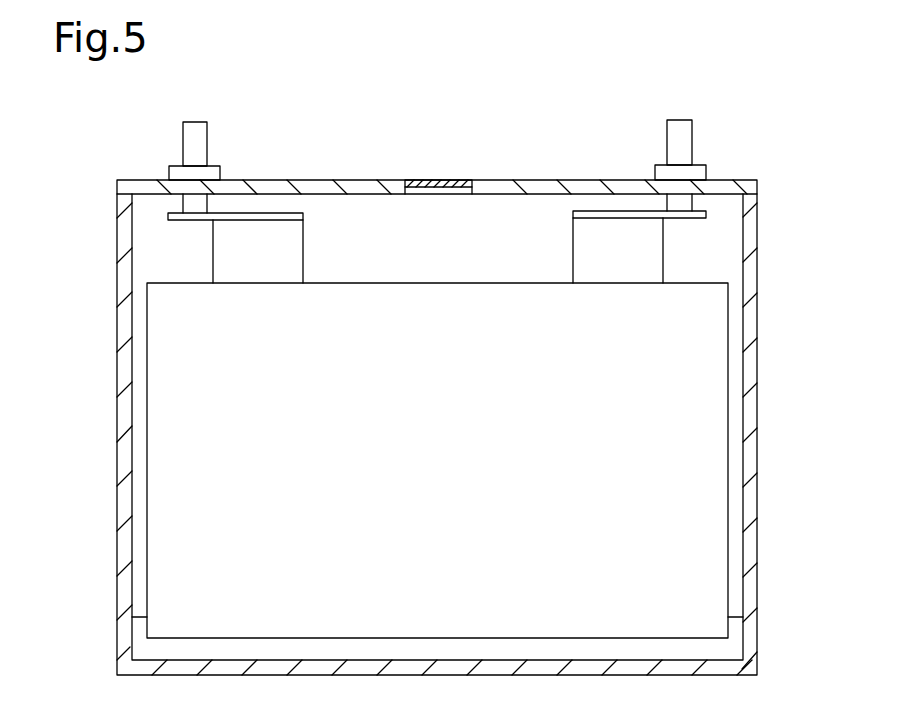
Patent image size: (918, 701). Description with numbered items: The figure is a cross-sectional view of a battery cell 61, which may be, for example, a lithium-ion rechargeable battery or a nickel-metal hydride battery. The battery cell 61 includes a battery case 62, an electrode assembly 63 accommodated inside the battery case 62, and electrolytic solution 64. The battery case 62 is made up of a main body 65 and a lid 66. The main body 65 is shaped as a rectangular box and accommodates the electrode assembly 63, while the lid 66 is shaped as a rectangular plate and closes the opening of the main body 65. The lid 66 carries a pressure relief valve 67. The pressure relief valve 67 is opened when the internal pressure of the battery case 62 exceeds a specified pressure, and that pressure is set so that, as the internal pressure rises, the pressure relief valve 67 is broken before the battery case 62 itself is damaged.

The battery cell 61 is at (62, 156).
The battery case 62 is at (62, 190).
The electrode assembly 63 is at (730, 410).
The electrolytic solution 64 is at (737, 633).
The main body 65 is at (123, 242).
The lid 66 is at (123, 188).
The pressure relief valve 67 is at (445, 178).